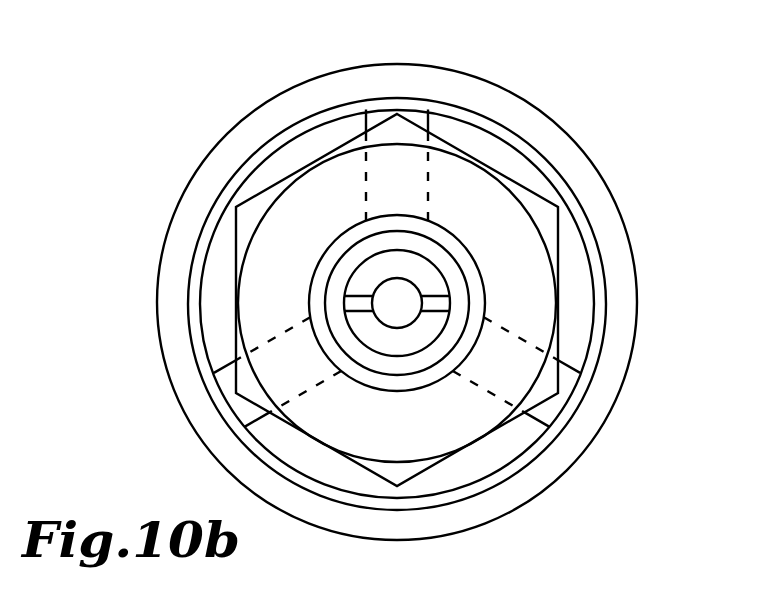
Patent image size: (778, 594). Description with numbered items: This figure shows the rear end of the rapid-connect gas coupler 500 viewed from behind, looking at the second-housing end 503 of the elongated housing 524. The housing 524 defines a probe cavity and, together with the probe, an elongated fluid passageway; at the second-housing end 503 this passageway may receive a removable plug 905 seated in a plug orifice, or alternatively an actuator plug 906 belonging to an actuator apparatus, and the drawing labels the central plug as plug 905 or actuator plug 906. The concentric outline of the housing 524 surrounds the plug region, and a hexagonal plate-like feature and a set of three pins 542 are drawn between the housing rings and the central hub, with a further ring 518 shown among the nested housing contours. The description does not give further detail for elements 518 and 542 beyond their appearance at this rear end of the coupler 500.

The rapid-connect gas coupler 500 is at (586, 82).
The second-housing end 503 is at (628, 171).
The housing ring 518 is at (186, 183).
The elongated housing 524 is at (577, 298).
The pin 542 is at (429, 122).
The plug 905 is at (450, 260).
The actuator plug 906 is at (426, 292).